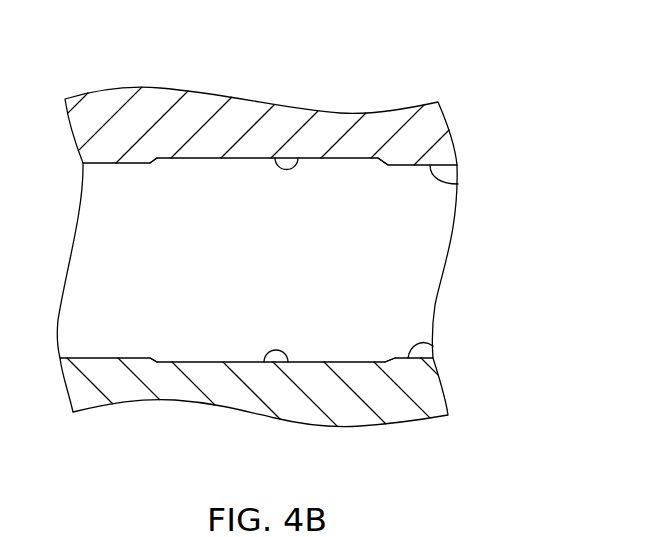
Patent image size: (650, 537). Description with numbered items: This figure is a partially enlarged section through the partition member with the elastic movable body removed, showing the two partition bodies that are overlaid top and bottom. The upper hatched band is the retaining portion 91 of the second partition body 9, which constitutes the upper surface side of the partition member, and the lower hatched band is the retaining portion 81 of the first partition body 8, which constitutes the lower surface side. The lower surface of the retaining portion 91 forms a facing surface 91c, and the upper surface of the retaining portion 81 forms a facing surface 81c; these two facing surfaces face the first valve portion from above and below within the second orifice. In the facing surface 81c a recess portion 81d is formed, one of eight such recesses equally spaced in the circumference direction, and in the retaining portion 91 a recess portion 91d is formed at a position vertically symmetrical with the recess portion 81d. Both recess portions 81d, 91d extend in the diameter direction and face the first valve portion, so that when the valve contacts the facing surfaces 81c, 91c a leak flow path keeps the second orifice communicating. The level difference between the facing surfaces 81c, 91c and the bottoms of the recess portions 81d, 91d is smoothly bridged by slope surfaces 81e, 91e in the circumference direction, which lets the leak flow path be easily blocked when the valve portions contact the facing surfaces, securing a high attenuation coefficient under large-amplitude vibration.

The second partition body 9 is at (391, 81).
The retaining portion 91 is at (281, 120).
The recess portion 91d is at (298, 160).
The facing surface 91c is at (458, 184).
The slope surface 91e is at (157, 167).
The first partition body 8 is at (376, 440).
The retaining portion 81 is at (185, 393).
The recess portion 81d is at (288, 363).
The facing surface 81c is at (433, 345).
The slope surface 81e is at (155, 357).